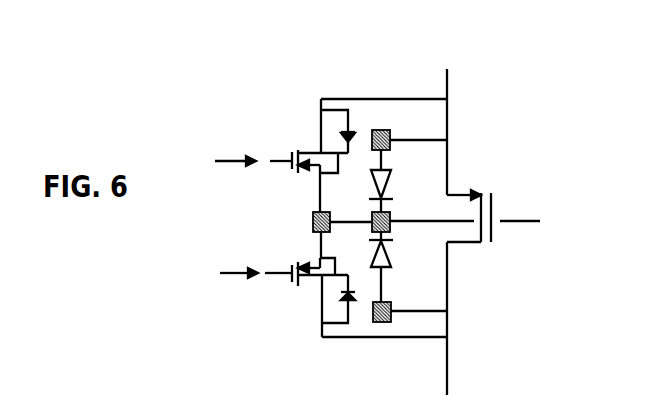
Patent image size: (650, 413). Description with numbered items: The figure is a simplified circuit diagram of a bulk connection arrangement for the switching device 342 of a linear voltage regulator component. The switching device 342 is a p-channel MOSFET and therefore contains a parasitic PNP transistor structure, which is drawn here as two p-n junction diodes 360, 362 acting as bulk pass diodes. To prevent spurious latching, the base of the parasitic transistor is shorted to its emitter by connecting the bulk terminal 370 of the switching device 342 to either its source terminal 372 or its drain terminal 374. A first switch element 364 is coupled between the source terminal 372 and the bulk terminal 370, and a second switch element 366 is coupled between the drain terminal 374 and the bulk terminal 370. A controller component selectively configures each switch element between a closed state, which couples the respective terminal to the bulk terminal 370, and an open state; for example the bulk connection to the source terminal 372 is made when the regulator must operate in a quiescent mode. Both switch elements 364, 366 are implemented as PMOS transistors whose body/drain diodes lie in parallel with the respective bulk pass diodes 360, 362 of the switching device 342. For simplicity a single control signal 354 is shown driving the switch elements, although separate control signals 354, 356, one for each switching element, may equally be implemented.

The switching device 342 is at (522, 113).
The control signal 354 is at (216, 133).
The control signal 356 is at (225, 222).
The p-n junction diode 360 is at (493, 214).
The p-n junction diode 362 is at (398, 260).
The switch element 364 is at (287, 117).
The switch element 366 is at (313, 263).
The bulk terminal 370 is at (298, 213).
The source terminal 372 is at (453, 83).
The drain terminal 374 is at (455, 287).